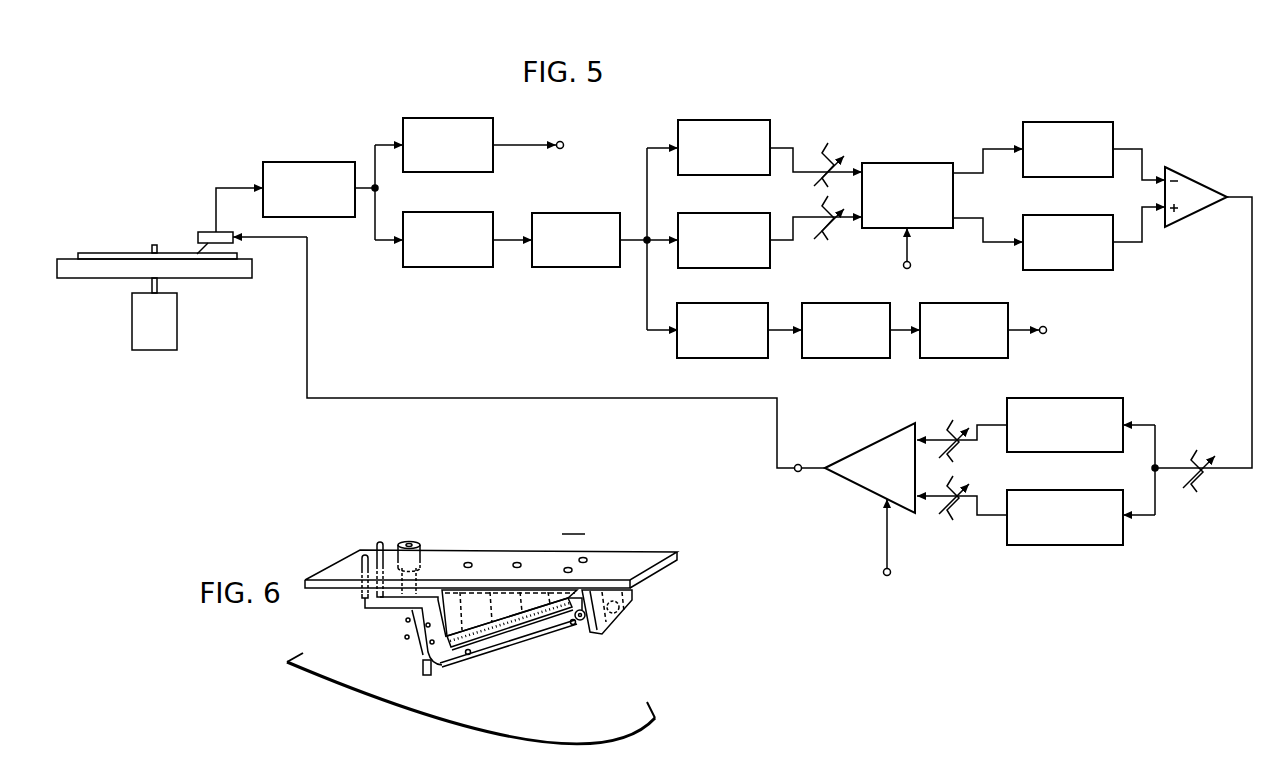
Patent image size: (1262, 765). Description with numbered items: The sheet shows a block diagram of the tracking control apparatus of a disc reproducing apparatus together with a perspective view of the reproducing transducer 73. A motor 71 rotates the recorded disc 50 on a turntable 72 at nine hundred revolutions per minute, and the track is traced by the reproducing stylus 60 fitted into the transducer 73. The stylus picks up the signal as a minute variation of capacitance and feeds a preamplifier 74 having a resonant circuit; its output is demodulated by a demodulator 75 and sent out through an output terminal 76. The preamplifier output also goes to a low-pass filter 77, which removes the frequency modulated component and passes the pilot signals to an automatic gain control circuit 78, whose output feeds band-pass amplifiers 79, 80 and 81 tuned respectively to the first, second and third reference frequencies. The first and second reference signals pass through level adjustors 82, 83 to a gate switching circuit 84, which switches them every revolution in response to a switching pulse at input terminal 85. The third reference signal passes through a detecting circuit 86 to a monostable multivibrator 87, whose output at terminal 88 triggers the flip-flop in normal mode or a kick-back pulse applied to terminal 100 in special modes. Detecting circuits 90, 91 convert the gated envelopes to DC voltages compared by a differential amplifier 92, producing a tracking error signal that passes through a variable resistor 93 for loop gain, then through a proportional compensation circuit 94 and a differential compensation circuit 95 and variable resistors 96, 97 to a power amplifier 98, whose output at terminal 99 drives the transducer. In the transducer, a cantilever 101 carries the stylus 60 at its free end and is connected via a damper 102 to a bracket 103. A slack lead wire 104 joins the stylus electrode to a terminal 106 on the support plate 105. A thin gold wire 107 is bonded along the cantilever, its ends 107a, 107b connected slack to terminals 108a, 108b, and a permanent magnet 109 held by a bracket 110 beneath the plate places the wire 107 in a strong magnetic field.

In FIG. 5, the recorded disc 50 is at (118, 253).
In FIG. 6, the recorded disc 50 is at (310, 676).
In FIG. 6, the reproducing stylus 60 is at (425, 672).
In FIG. 5, the motor 71 is at (132, 316).
In FIG. 5, the turntable 72 is at (212, 279).
In FIG. 5, the reproducing transducer 73 is at (207, 231).
In FIG. 6, the reproducing transducer 73 is at (572, 523).
In FIG. 5, the preamplifier 74 is at (303, 161).
In FIG. 5, the demodulator 75 is at (433, 117).
In FIG. 5, the output terminal 76 is at (560, 141).
In FIG. 5, the low-pass filter 77 is at (440, 268).
In FIG. 5, the automatic gain control circuit 78 is at (573, 268).
In FIG. 5, the band-pass amplifier 79 is at (715, 119).
In FIG. 5, the band-pass amplifier 80 is at (708, 212).
In FIG. 5, the band-pass amplifier 81 is at (713, 358).
In FIG. 5, the level adjustor 82 is at (828, 152).
In FIG. 5, the level adjustor 83 is at (828, 244).
In FIG. 5, the gate switching circuit 84 is at (898, 162).
In FIG. 5, the input terminal 85 is at (913, 265).
In FIG. 5, the detecting circuit 86 is at (836, 358).
In FIG. 5, the monostable multivibrator 87 is at (958, 358).
In FIG. 5, the output terminal 88 is at (1043, 334).
In FIG. 5, the detecting circuit 90 is at (1053, 121).
In FIG. 5, the detecting circuit 91 is at (1113, 260).
In FIG. 5, the differential amplifier 92 is at (1192, 180).
In FIG. 5, the variable resistor 93 is at (1203, 492).
In FIG. 5, the proportional compensation circuit 94 is at (1063, 453).
In FIG. 5, the differential compensation circuit 95 is at (1067, 546).
In FIG. 5, the variable resistor 96 is at (960, 418).
In FIG. 5, the variable resistor 97 is at (951, 522).
In FIG. 5, the power amplifier 98 is at (852, 481).
In FIG. 5, the output terminal 99 is at (798, 464).
In FIG. 5, the terminal 100 is at (891, 578).
In FIG. 6, the cantilever 101 is at (500, 645).
In FIG. 6, the damper 102 is at (586, 623).
In FIG. 6, the bracket 103 is at (635, 600).
In FIG. 6, the lead wire 104 is at (405, 626).
In FIG. 6, the support plate 105 is at (627, 551).
In FIG. 6, the terminal 106 is at (414, 543).
In FIG. 6, the gold wire 107 is at (468, 655).
In FIG. 6, the wire end 107a is at (573, 626).
In FIG. 6, the wire end 107b is at (427, 642).
In FIG. 6, the terminal 108a is at (379, 541).
In FIG. 6, the terminal 108b is at (360, 558).
In FIG. 6, the permanent magnet 109 is at (530, 622).
In FIG. 6, the bracket 110 is at (478, 598).